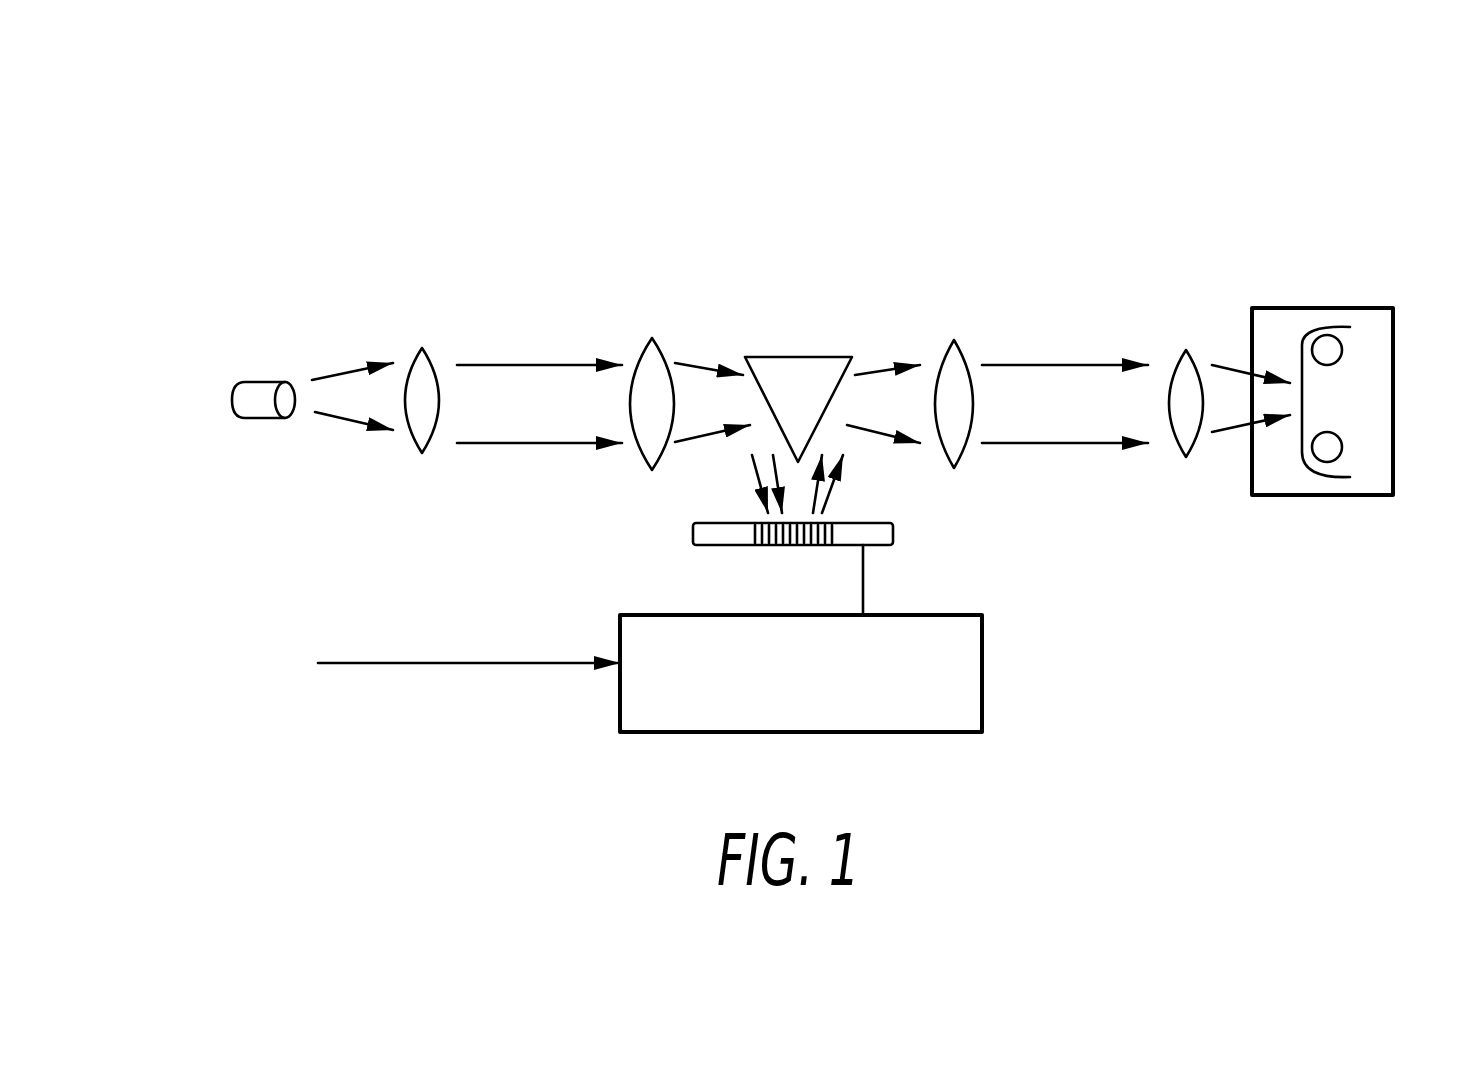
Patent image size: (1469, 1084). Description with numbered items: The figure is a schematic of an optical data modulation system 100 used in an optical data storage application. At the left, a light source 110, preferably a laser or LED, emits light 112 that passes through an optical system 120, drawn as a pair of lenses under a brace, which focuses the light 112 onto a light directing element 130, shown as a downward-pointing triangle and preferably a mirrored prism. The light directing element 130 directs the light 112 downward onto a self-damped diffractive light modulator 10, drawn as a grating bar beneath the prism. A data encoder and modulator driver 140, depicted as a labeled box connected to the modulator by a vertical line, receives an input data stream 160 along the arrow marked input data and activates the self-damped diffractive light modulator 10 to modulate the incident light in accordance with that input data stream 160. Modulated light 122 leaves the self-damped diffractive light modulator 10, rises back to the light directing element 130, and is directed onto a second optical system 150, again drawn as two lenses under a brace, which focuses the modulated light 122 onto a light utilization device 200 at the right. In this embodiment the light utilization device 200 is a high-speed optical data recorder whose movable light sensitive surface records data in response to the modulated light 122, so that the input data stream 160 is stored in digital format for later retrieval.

The optical data modulation system 100 is at (593, 222).
The light source 110 is at (257, 380).
The light 112 is at (342, 420).
The optical system 120 is at (675, 323).
The light directing element 130 is at (813, 333).
The modulated light 122 is at (840, 483).
The optical system 150 is at (1212, 322).
The light utilization device 200 is at (1348, 308).
The self-damped diffractive light modulator 10 is at (905, 533).
The data encoder and modulator driver 140 is at (933, 732).
The input data stream 160 is at (440, 665).